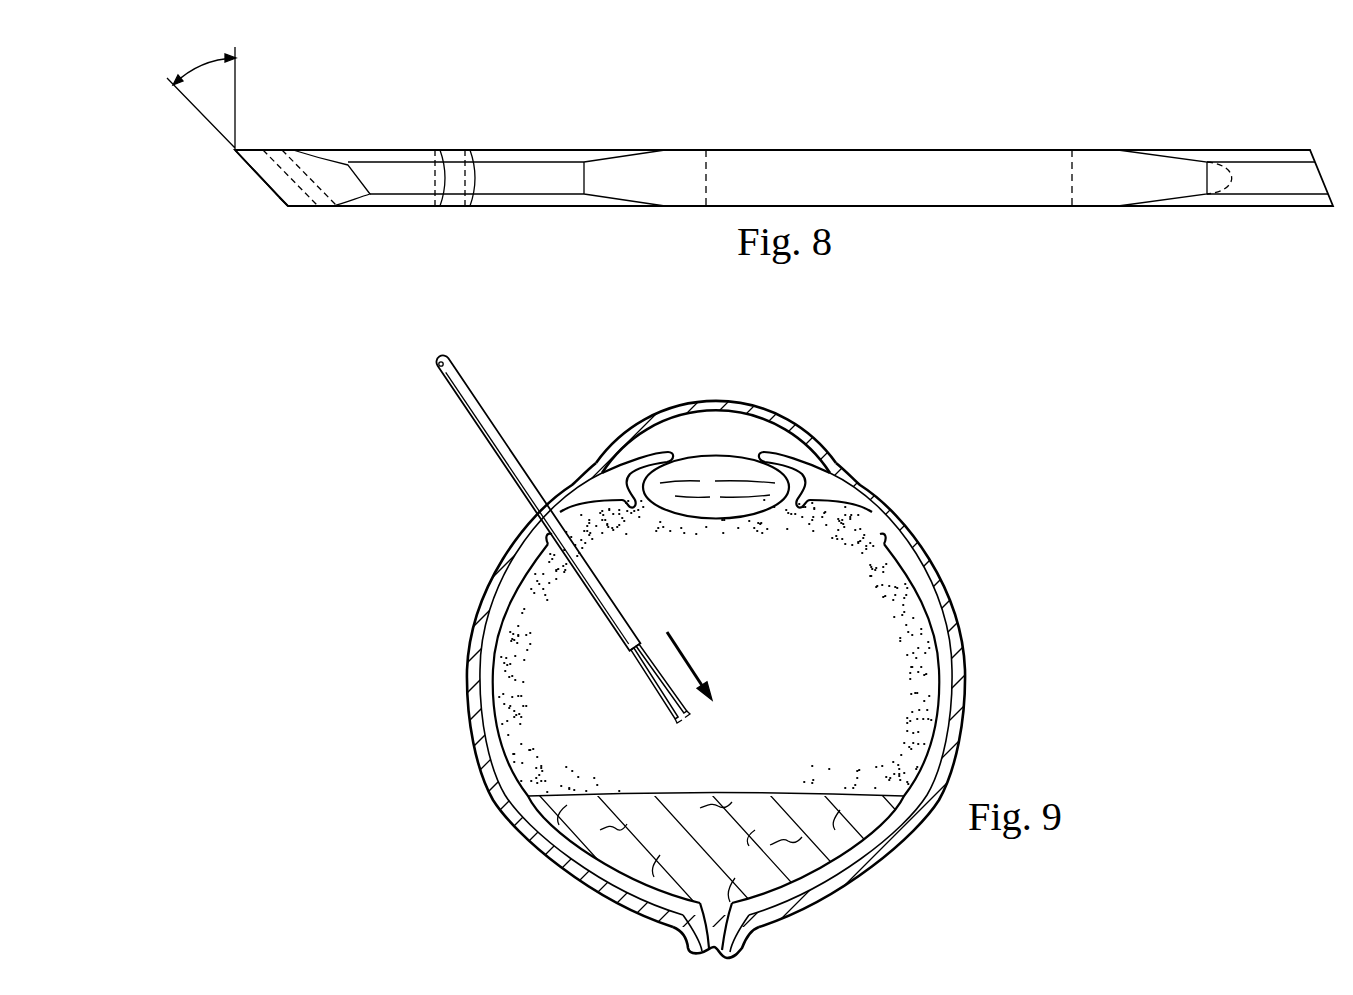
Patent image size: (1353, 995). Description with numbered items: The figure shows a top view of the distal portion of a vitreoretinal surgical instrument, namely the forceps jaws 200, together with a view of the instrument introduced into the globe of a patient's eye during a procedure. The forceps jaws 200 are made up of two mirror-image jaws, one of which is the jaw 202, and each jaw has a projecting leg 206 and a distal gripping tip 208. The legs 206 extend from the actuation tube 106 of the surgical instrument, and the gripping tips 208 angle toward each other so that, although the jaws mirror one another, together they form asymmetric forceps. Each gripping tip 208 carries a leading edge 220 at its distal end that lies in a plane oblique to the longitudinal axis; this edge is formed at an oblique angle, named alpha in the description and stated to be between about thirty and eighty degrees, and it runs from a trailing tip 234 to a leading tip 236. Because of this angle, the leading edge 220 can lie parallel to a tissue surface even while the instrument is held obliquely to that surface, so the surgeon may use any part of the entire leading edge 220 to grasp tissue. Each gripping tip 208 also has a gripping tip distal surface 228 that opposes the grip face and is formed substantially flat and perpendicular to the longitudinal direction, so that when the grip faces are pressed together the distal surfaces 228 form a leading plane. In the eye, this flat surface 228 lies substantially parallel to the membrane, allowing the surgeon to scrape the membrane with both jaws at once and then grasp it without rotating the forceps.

In FIG. 8, the forceps jaws 200 is at (660, 107).
In FIG. 9, the forceps jaws 200 is at (639, 680).
In FIG. 8, the jaw 202 is at (515, 168).
In FIG. 8, the projecting leg 206 is at (393, 168).
In FIG. 8, the distal gripping tip 208 is at (180, 230).
In FIG. 8, the leading edge 220 is at (265, 187).
In FIG. 8, the gripping tip distal surface 228 is at (248, 167).
In FIG. 8, the trailing tip 234 is at (287, 208).
In FIG. 8, the leading tip 236 is at (238, 152).
In FIG. 9, the actuation tube 106 is at (608, 594).